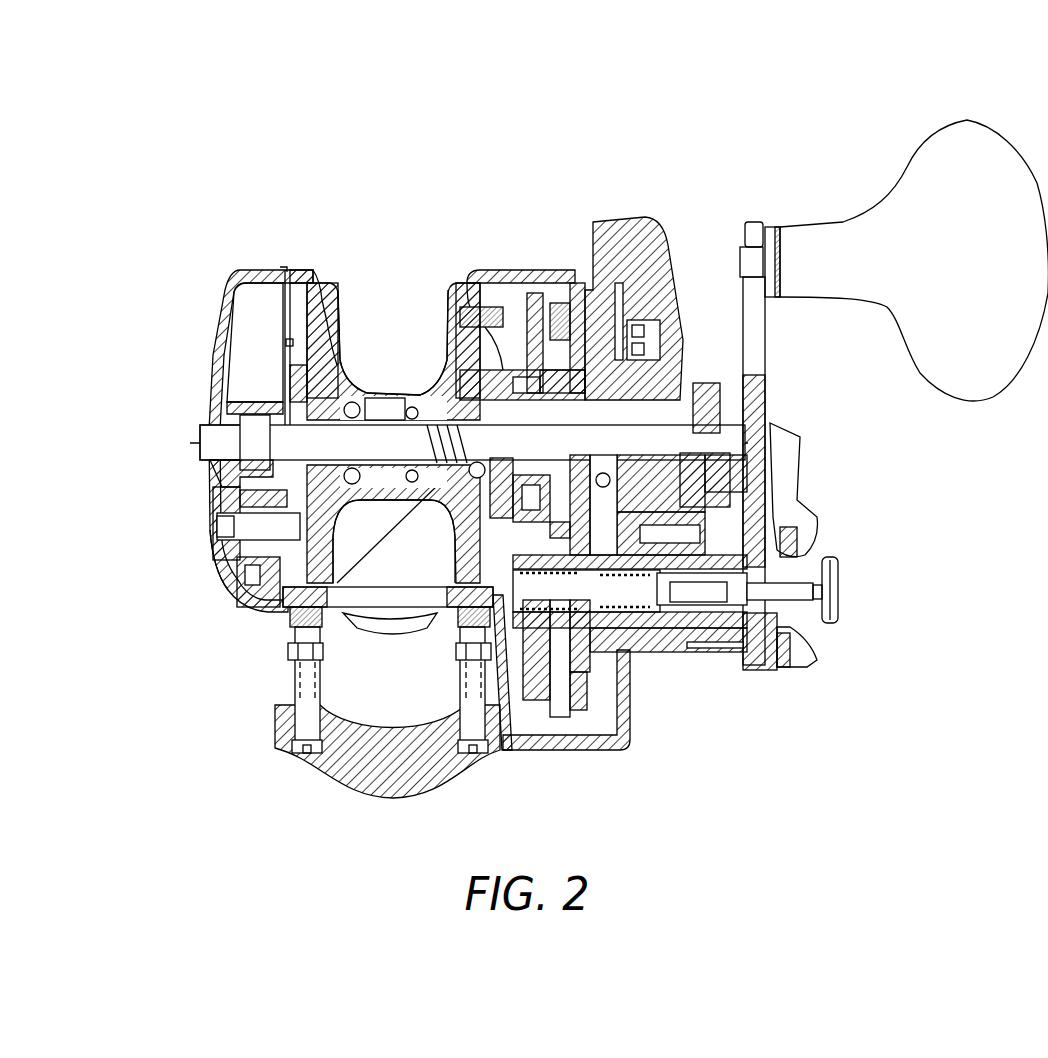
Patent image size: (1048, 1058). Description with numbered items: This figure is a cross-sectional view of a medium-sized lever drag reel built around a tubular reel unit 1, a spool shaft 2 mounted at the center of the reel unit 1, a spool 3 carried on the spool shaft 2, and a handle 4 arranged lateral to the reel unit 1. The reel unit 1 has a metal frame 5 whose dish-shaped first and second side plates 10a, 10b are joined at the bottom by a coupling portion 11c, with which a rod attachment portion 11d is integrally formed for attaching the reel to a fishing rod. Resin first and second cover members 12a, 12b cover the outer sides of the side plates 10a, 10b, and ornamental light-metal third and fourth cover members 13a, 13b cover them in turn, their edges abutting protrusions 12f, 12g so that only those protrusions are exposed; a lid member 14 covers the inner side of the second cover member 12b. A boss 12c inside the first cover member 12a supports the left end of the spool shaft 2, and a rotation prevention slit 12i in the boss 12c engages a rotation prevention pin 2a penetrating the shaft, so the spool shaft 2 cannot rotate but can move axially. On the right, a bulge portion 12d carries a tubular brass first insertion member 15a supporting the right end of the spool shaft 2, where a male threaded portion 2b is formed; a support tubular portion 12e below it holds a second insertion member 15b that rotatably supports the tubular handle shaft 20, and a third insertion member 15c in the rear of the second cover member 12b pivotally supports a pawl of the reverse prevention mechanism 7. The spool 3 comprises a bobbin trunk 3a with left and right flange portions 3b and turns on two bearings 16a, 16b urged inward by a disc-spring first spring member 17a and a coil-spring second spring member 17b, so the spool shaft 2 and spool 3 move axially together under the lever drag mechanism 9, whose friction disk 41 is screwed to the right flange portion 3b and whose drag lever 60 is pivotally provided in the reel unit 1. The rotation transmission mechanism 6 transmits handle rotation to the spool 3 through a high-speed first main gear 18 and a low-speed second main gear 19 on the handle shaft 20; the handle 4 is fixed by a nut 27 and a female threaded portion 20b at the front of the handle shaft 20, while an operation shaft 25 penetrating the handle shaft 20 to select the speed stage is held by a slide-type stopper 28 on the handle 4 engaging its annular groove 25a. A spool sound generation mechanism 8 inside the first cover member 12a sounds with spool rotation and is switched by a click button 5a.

The reel unit 1 is at (428, 201).
The spool shaft 2 is at (385, 424).
The rotation prevention pin 2a is at (212, 420).
The male threaded portion 2b is at (717, 385).
The spool 3 is at (380, 378).
The bobbin trunk 3a is at (413, 390).
The flange portions 3b is at (323, 327).
The handle 4 is at (760, 355).
The frame 5 is at (298, 258).
The click button 5a is at (218, 560).
The rotation transmission mechanism 6 is at (560, 717).
The reverse prevention mechanism 7 is at (521, 300).
The spool sound generation mechanism 8 is at (260, 603).
The lever drag mechanism 9 is at (465, 283).
The first side plate 10a is at (313, 277).
The second side plate 10b is at (497, 272).
The coupling portion 11c is at (397, 590).
The rod attachment portion 11d is at (365, 636).
The first cover member 12a is at (262, 270).
The second cover member 12b is at (577, 275).
The boss 12c is at (266, 397).
The bulge portion 12d is at (630, 707).
The support tubular portion 12e is at (703, 652).
The protrusion 12f is at (283, 268).
The protrusion 12g is at (547, 270).
The rotation prevention slit 12i is at (215, 497).
The third cover member 13a is at (238, 271).
The fourth cover member 13b is at (563, 272).
The lid member 14 is at (503, 687).
The first insertion member 15a is at (683, 375).
The second insertion member 15b is at (723, 650).
The third insertion member 15c is at (623, 217).
The bearing 16a is at (352, 392).
The bearing 16b is at (400, 495).
The first spring member 17a is at (210, 467).
The second spring member 17b is at (292, 603).
The first main gear 18 is at (577, 703).
The second main gear 19 is at (553, 700).
The handle shaft 20 is at (670, 650).
The female threaded portion 20b is at (783, 567).
The operation shaft 25 is at (803, 600).
The annular groove 25a is at (838, 613).
The nut 27 is at (807, 667).
The stopper 28 is at (807, 517).
The friction disk 41 is at (447, 620).
The drag lever 60 is at (663, 223).